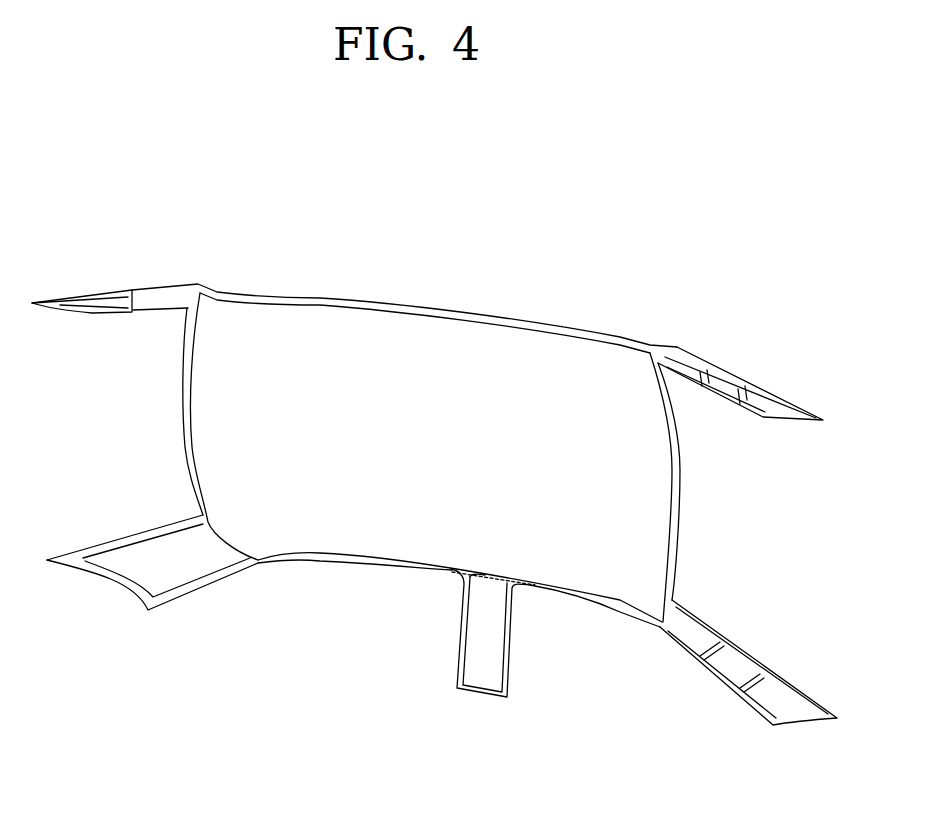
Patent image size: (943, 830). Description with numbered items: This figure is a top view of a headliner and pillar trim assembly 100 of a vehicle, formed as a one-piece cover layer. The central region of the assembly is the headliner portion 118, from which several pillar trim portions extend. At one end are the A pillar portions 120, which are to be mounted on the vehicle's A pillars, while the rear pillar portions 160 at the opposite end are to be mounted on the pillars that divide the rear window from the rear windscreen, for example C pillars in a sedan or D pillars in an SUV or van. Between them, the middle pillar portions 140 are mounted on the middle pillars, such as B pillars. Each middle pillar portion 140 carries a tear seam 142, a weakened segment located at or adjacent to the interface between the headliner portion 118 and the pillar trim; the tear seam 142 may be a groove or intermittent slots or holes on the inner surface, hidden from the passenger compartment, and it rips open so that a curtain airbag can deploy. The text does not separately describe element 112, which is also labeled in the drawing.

The headliner and pillar trim assembly 100 is at (563, 222).
The front roof rail 112 is at (424, 293).
The headliner portion 118 is at (373, 569).
The A pillar portions 120 is at (741, 369).
The middle pillar portions 140 is at (510, 652).
The tear seam 142 is at (489, 578).
The rear pillar portions 160 is at (97, 290).